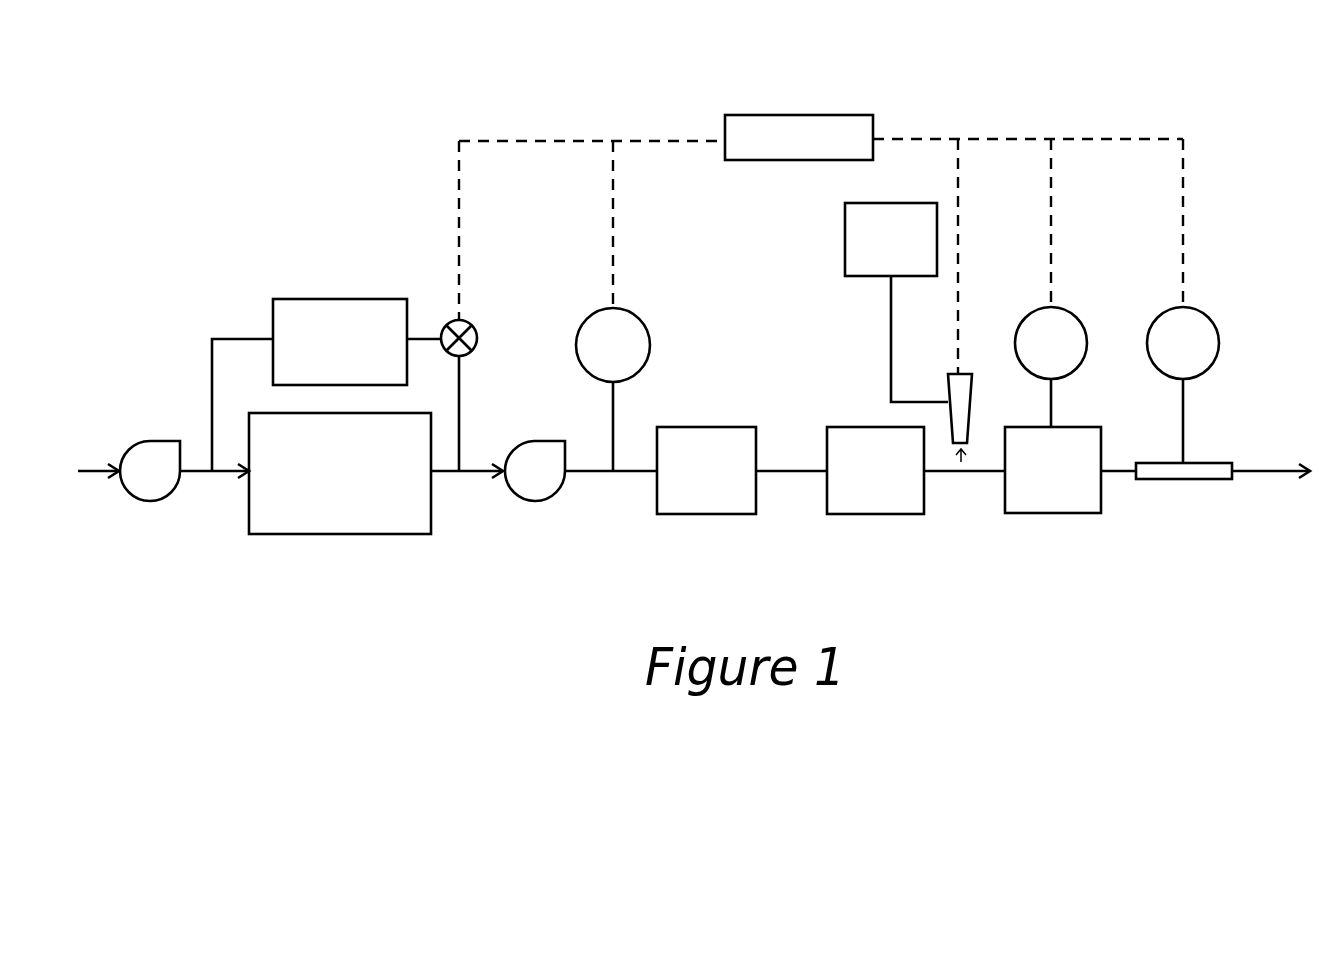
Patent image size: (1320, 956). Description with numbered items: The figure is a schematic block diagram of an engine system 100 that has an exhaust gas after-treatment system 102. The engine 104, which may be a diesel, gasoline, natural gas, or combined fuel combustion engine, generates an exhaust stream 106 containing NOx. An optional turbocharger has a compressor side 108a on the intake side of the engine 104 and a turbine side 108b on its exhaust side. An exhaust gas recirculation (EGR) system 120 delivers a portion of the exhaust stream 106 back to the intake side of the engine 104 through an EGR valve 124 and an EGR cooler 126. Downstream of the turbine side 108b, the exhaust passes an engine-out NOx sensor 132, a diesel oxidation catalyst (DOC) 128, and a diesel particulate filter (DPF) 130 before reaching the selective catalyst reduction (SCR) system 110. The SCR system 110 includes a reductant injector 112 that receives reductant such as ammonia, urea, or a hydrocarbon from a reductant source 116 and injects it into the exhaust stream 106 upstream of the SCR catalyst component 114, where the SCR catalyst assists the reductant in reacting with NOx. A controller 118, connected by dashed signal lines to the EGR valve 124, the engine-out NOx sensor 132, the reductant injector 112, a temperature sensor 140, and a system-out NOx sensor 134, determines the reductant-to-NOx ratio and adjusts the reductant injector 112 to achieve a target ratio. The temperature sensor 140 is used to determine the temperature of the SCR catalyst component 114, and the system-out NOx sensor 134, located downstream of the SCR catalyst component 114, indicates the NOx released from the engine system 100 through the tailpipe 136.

The engine system 100 is at (357, 147).
The exhaust gas after-treatment system 102 is at (830, 390).
The engine 104 is at (307, 534).
The exhaust stream 106 is at (447, 475).
The compressor side 108a is at (143, 505).
The turbine side 108b is at (545, 503).
The selective catalyst reduction (SCR) system 110 is at (968, 533).
The reductant injector 112 is at (972, 402).
The SCR catalyst component 114 is at (1055, 513).
The reductant source 116 is at (843, 243).
The controller 118 is at (843, 113).
The exhaust gas recirculation (EGR) system 120 is at (245, 287).
The EGR valve 124 is at (498, 310).
The EGR cooler 126 is at (327, 298).
The diesel oxidation catalyst (DOC) 128 is at (690, 514).
The diesel particulate filter (DPF) 130 is at (840, 514).
The engine-out NOx sensor 132 is at (647, 282).
The system-out NOx sensor 134 is at (1207, 305).
The tailpipe 136 is at (1192, 480).
The temperature sensor 140 is at (1067, 303).